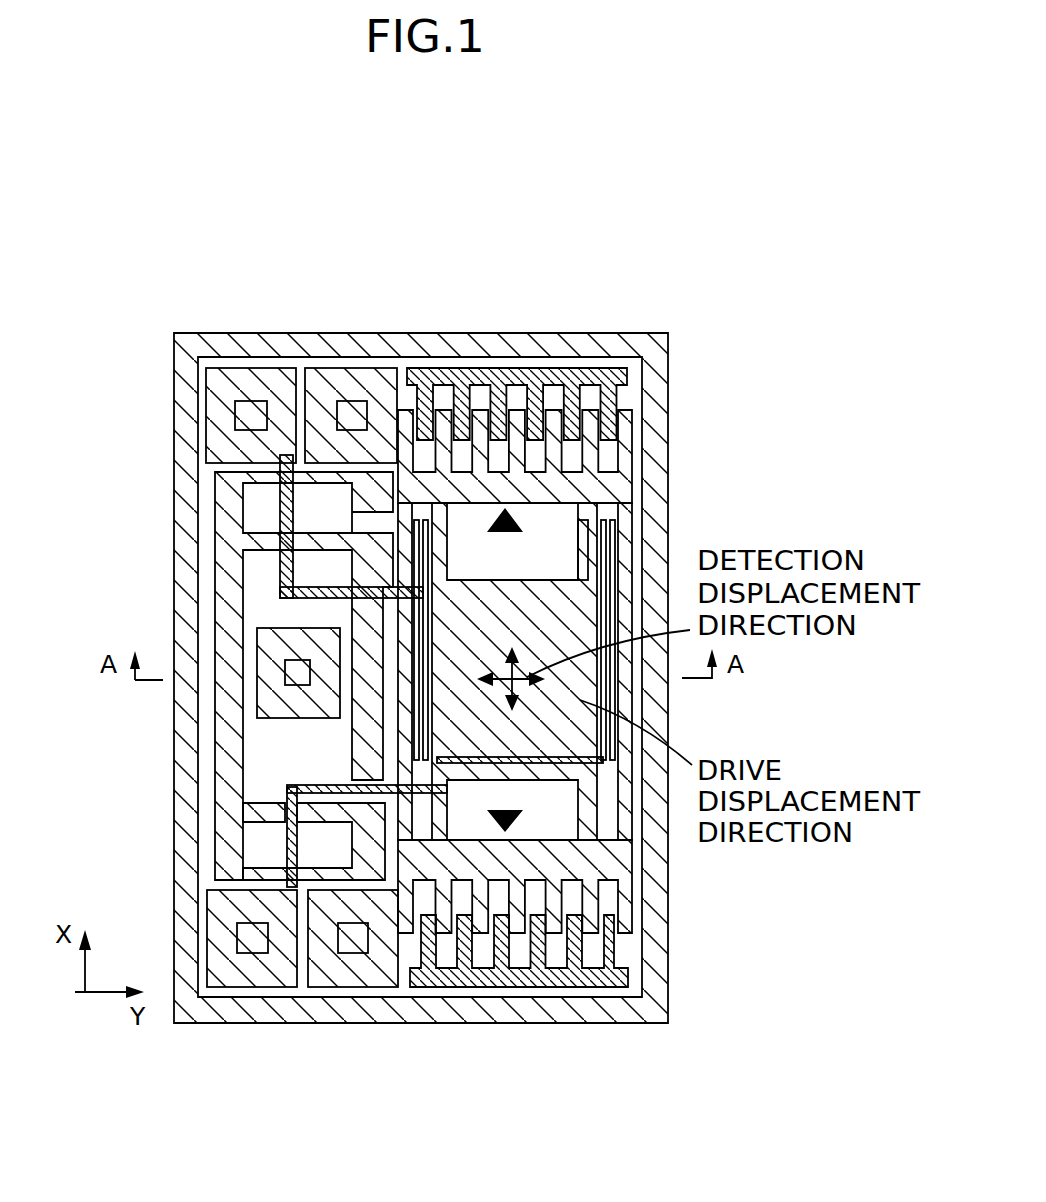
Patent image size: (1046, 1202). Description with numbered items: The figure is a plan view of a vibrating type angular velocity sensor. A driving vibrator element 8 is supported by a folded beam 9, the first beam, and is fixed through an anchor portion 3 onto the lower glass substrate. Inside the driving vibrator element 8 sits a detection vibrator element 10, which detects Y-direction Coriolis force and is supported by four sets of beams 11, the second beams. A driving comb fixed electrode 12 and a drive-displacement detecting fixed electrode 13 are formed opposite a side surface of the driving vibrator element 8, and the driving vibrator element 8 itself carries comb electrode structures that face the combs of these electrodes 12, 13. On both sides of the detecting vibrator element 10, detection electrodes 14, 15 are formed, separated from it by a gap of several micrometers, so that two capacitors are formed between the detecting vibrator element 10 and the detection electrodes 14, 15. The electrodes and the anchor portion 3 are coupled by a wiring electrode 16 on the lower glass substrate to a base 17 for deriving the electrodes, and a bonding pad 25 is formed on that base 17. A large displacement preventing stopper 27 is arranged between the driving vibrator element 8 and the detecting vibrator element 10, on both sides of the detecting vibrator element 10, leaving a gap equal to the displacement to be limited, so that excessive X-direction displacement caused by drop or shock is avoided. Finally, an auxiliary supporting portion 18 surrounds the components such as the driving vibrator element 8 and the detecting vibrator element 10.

The anchor portion 3 is at (350, 660).
The driving vibrator element 8 is at (440, 410).
The beam used for the driving vibrator element 9 is at (252, 542).
The detection vibrator element 10 is at (513, 692).
The beams used for the detection vibrator element 11 is at (582, 556).
The driving comb fixed electrode 12 is at (573, 375).
The drive-displacement detecting fixed electrode 13 is at (612, 940).
The detection electrode 14 is at (445, 767).
The detection electrode 15 is at (578, 548).
The wiring electrode 16 is at (287, 456).
The base for deriving the respective electrodes 17 is at (237, 381).
The auxiliary supporting portion 18 is at (190, 423).
The bonding pad 25 is at (242, 401).
The large displacement preventing stopper 27 is at (520, 515).